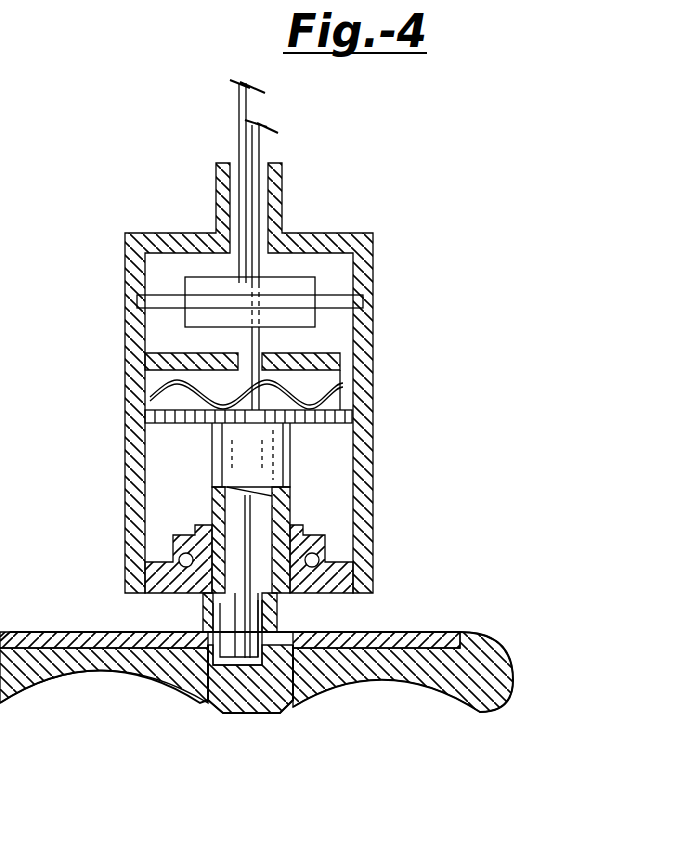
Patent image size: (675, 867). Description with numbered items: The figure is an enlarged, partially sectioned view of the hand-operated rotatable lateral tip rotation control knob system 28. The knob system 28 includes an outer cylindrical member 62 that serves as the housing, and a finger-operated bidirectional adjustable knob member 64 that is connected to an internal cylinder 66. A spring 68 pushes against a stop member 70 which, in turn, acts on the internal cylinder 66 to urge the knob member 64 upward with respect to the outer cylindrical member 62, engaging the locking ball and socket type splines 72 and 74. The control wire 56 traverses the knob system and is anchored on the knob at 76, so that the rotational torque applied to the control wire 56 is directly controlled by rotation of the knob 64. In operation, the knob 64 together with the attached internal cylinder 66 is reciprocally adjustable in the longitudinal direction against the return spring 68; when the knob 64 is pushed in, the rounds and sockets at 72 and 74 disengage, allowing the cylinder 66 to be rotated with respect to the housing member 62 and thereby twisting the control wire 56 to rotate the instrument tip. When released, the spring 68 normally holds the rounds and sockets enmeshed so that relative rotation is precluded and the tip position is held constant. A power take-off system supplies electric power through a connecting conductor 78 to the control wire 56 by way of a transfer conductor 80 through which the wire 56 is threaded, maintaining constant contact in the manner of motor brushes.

The hand-operated knob system 28 is at (413, 390).
The control wire 56 is at (260, 152).
The outer cylindrical member 62 is at (373, 470).
The knob member 64 is at (480, 713).
The internal cylinder 66 is at (290, 484).
The spring 68 is at (337, 358).
The stop member 70 is at (177, 425).
The ball and socket type spline 72 is at (193, 540).
The ball and socket type spline 74 is at (312, 597).
The anchor 76 is at (213, 667).
The connecting conductor 78 is at (237, 127).
The transfer conductor 80 is at (317, 277).